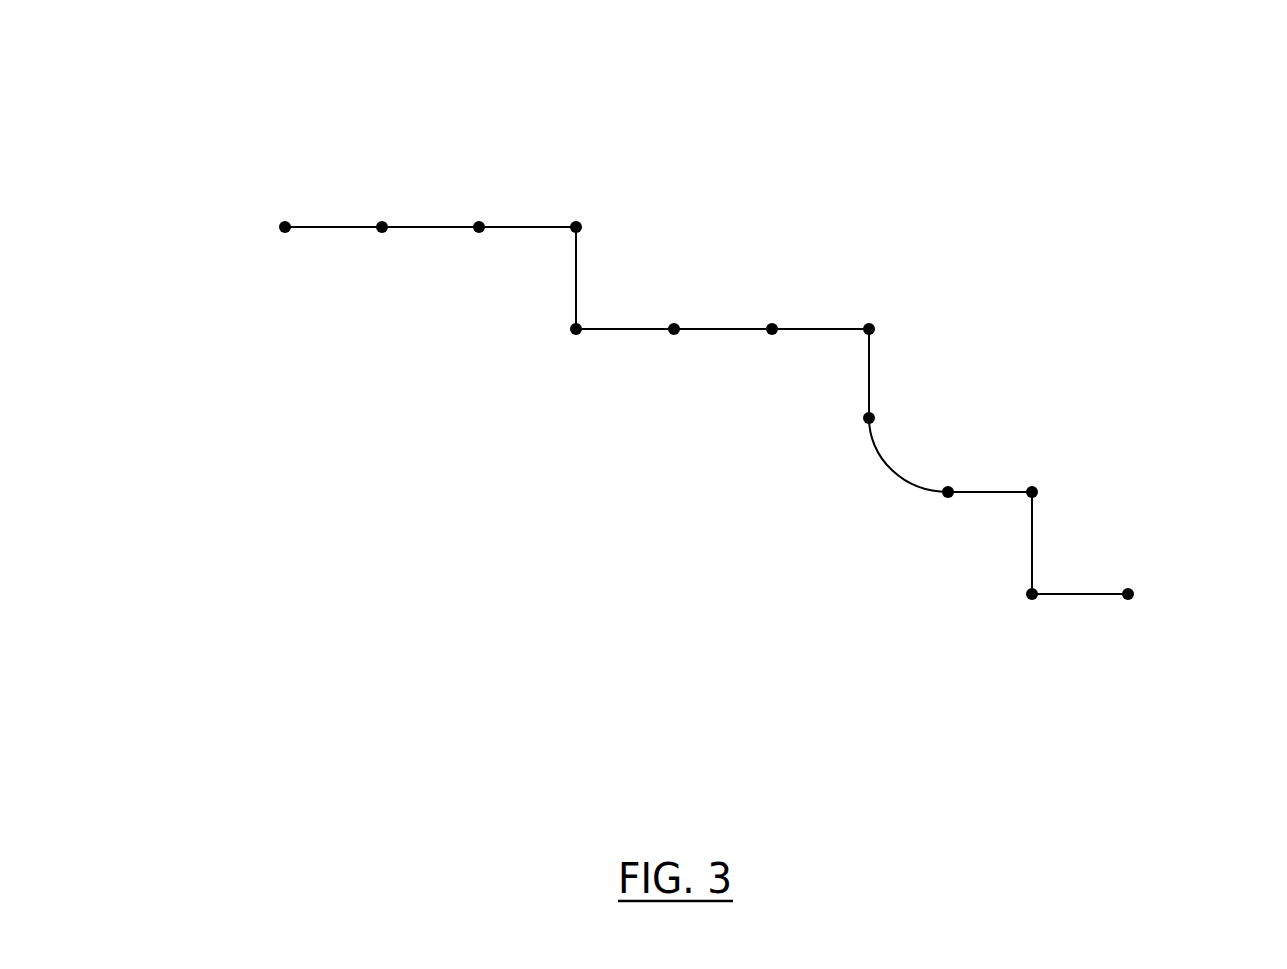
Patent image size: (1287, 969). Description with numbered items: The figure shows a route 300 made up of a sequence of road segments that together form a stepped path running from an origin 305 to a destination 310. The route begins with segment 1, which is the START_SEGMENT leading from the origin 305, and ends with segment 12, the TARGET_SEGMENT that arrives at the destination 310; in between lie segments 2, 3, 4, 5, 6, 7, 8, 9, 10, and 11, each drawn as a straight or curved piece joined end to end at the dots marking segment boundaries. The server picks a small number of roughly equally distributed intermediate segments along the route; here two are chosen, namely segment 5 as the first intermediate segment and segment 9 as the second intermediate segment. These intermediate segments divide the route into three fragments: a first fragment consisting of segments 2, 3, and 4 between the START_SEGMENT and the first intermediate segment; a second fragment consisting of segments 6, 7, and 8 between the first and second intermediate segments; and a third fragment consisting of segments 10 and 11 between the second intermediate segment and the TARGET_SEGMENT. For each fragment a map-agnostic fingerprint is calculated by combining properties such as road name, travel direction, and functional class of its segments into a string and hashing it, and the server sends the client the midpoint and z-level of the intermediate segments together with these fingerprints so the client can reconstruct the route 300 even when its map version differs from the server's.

The route 300 is at (268, 101).
The origin 305 is at (285, 227).
The destination 310 is at (1128, 594).
The segment 1 (START_SEGMENT) 1 is at (333, 204).
The segment 2 is at (430, 204).
The segment 3 is at (527, 204).
The segment 4 is at (562, 278).
The segment 5 (intermediate segment V_1) 5 is at (625, 304).
The segment 6 is at (723, 304).
The segment 7 is at (820, 304).
The segment 8 is at (890, 373).
The segment 9 (intermediate segment V_2) 9 is at (908, 455).
The segment 10 is at (990, 471).
The segment 11 is at (1009, 543).
The segment 12 (TARGET_SEGMENT) 12 is at (1080, 573).